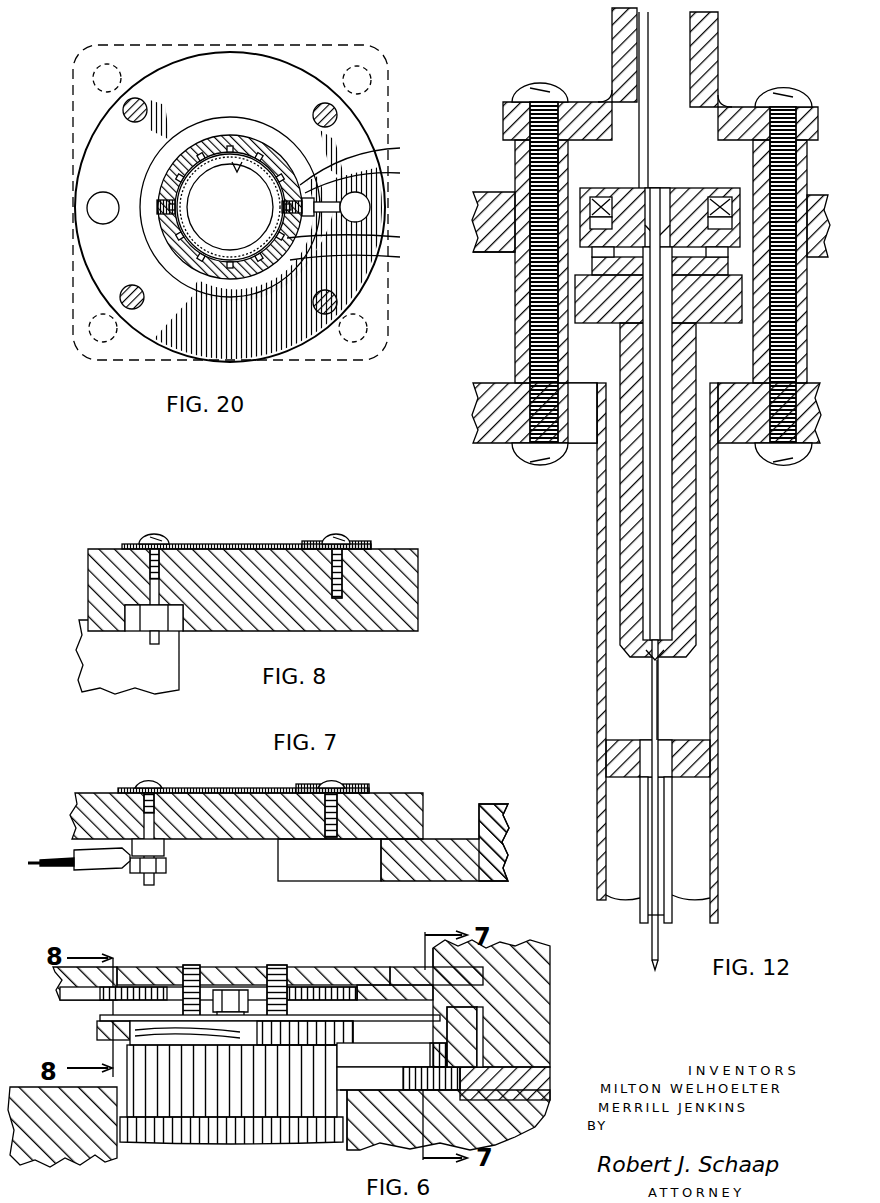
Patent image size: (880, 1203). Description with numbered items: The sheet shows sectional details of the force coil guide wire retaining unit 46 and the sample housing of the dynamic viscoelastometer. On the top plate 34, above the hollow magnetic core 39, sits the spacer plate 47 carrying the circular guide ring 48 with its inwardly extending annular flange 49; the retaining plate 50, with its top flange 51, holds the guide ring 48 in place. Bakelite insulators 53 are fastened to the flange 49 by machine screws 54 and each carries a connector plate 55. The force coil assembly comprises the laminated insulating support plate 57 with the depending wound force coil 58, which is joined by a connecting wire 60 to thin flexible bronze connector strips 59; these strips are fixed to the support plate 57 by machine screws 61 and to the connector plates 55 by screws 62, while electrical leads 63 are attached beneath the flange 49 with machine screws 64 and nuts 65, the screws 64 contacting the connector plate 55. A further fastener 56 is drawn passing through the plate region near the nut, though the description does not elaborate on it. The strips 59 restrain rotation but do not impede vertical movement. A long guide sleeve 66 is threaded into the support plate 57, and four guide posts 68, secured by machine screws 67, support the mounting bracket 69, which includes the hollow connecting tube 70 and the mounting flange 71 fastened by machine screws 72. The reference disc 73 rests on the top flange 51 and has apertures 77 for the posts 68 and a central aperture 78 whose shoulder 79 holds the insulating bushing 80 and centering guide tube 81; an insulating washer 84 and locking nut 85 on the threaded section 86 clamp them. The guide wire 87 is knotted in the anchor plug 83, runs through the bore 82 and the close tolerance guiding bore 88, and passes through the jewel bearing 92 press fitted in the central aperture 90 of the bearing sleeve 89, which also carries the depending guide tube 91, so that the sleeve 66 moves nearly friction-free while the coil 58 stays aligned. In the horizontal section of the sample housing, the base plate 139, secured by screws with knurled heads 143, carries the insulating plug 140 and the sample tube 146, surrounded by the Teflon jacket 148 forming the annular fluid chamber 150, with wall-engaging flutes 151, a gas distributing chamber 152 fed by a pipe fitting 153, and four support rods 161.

In FIG. 6, the top plate 34 is at (533, 1113).
In FIG. 6, the central hollow magnetic core 39 is at (115, 1157).
In FIG. 6, the force coil guide wire retaining unit 46 is at (347, 967).
In FIG. 6, the spacer plate 47 is at (547, 1082).
In FIG. 8, the circular guide ring 48 is at (180, 682).
In FIG. 7, the circular guide ring 48 is at (490, 812).
In FIG. 6, the circular guide ring 48 is at (463, 1050).
In FIG. 7, the annular flange 49 is at (396, 880).
In FIG. 6, the annular flange 49 is at (393, 973).
In FIG. 6, the retaining plate 50 is at (543, 1010).
In FIG. 6, the top flange 51 is at (147, 985).
In FIG. 7, the insulators 53 is at (88, 793).
In FIG. 6, the insulators 53 is at (527, 958).
In FIG. 6, the machine screws 54 is at (473, 967).
In FIG. 7, the connector plate 55 is at (235, 788).
In FIG. 6, the bolt 56 is at (220, 958).
In FIG. 8, the laminated insulating support plate 57 is at (335, 632).
In FIG. 12, the laminated insulating support plate 57 is at (475, 395).
In FIG. 6, the force coil 58 is at (317, 1140).
In FIG. 8, the connector strips 59 is at (360, 542).
In FIG. 7, the connector strips 59 is at (345, 785).
In FIG. 6, the connector strips 59 is at (315, 1025).
In FIG. 6, the connecting wire 60 is at (110, 1040).
In FIG. 8, the machine screws 61 is at (335, 535).
In FIG. 8, the screws 62 is at (155, 538).
In FIG. 7, the electrical leads 63 is at (60, 866).
In FIG. 7, the machine screws 64 is at (150, 782).
In FIG. 7, the nuts 65 is at (166, 868).
In FIG. 6, the guide sleeve 66 is at (273, 1092).
In FIG. 12, the guide sleeve 66 is at (712, 540).
In FIG. 12, the machine screws 67 is at (520, 465).
In FIG. 6, the guide posts 68 is at (283, 966).
In FIG. 12, the guide posts 68 is at (515, 330).
In FIG. 12, the mounting bracket 69 is at (722, 100).
In FIG. 12, the connecting tube 70 is at (712, 72).
In FIG. 12, the mounting flange 71 is at (505, 100).
In FIG. 12, the machine screws 72 is at (785, 91).
In FIG. 12, the reference disc 73 is at (640, 199).
In FIG. 12, the apertures 77 is at (515, 255).
In FIG. 12, the central aperture 78 is at (593, 200).
In FIG. 12, the supporting shoulder 79 is at (600, 215).
In FIG. 12, the insulating bushing 80 is at (720, 205).
In FIG. 12, the centering guide tube 81 is at (688, 195).
In FIG. 12, the axial central bore 82 is at (652, 515).
In FIG. 12, the anchor plug 83 is at (635, 195).
In FIG. 12, the insulating washer 84 is at (600, 260).
In FIG. 12, the locking nut 85 is at (600, 280).
In FIG. 12, the externally threaded section 86 is at (605, 325).
In FIG. 12, the guide wire 87 is at (657, 690).
In FIG. 12, the guiding bore 88 is at (660, 656).
In FIG. 12, the bearing sleeve 89 is at (700, 770).
In FIG. 12, the central aperture 90 is at (640, 742).
In FIG. 12, the guide tube 91 is at (672, 890).
In FIG. 12, the jewel-type bearing 92 is at (630, 755).
In FIG. 20, the base plate 139 is at (278, 342).
In FIG. 20, the insulating plug 140 is at (226, 125).
In FIG. 20, the knurled heads 143 is at (100, 208).
In FIG. 20, the sample tube 146 is at (246, 158).
In FIG. 20, the Teflon jacket 148 is at (197, 140).
In FIG. 20, the annular fluid chamber 150 is at (370, 238).
In FIG. 20, the wall-engaging flutes 151 is at (370, 258).
In FIG. 20, the annular gas distributing chamber 152 is at (380, 150).
In FIG. 20, the pipe fitting 153 is at (335, 197).
In FIG. 20, the support rods 161 is at (325, 112).